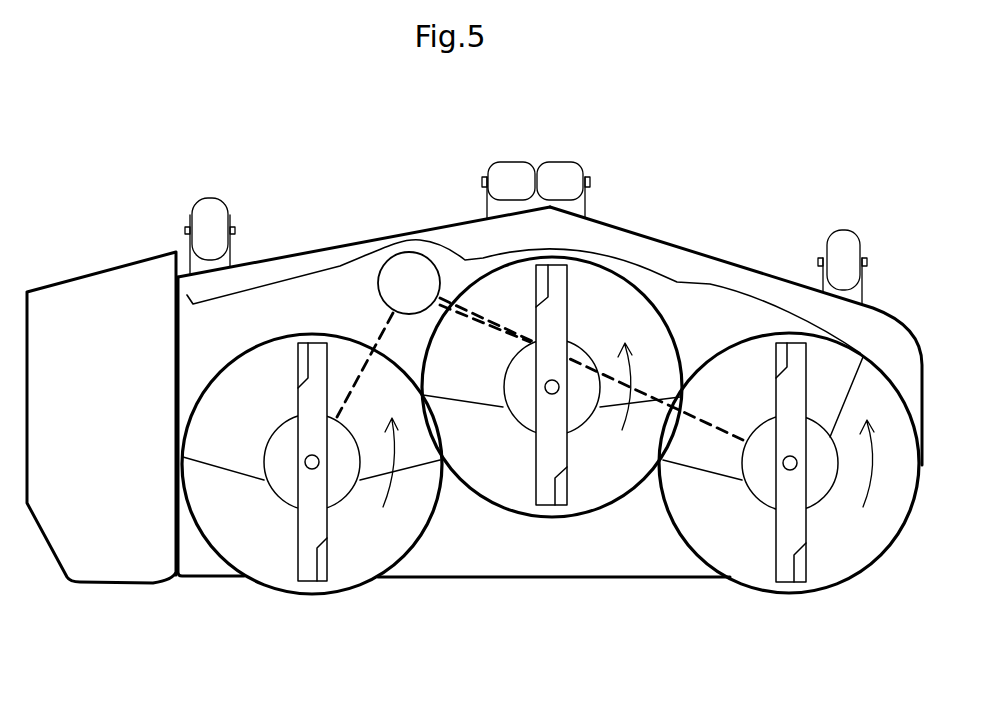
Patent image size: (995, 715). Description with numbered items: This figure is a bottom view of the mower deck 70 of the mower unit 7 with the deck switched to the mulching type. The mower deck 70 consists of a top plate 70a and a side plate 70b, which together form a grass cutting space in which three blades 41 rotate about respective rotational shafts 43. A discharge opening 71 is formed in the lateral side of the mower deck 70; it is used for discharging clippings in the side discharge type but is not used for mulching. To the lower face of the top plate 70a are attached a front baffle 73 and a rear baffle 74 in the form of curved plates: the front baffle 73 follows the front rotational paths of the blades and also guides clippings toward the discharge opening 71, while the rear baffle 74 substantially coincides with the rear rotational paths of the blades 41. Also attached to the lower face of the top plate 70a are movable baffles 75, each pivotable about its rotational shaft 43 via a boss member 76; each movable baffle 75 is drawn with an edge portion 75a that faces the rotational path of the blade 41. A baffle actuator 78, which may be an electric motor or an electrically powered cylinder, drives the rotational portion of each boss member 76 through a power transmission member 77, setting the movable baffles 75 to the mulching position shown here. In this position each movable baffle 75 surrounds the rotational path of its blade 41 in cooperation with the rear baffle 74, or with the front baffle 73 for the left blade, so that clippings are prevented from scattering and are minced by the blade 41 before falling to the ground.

The mower unit 7 is at (286, 150).
The blade 41 is at (309, 583).
The rotational shaft 43 is at (317, 468).
The mower deck 70 is at (729, 262).
The top plate 70a is at (595, 238).
The side plate 70b is at (673, 244).
The discharge opening 71 is at (173, 381).
The front baffle 73 is at (702, 282).
The rear baffle 74 is at (505, 512).
The movable baffle 75 is at (290, 332).
The cutting edge 75a is at (240, 477).
The boss member 76 is at (267, 442).
The power transmission member 77 is at (383, 330).
The baffle actuator 78 is at (409, 283).